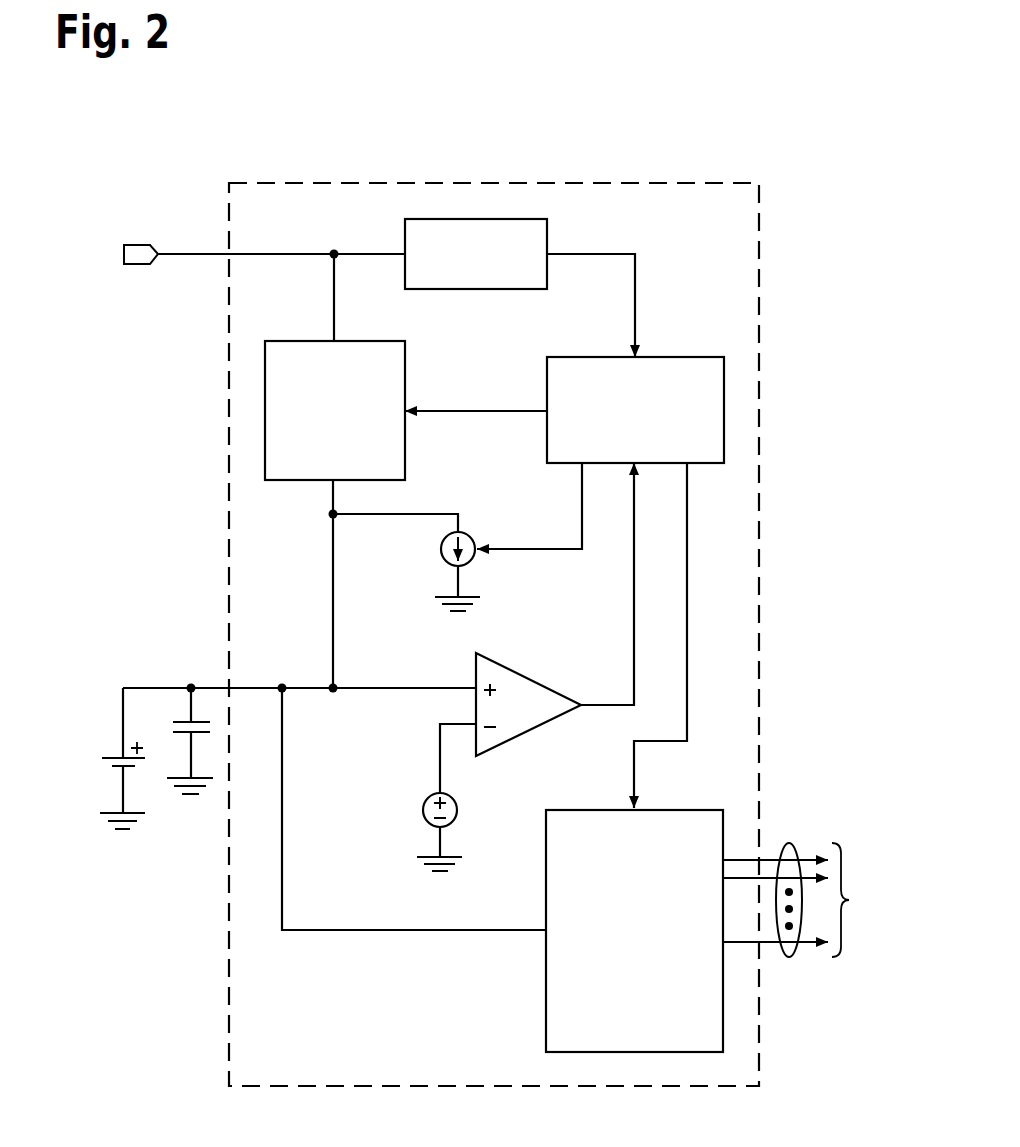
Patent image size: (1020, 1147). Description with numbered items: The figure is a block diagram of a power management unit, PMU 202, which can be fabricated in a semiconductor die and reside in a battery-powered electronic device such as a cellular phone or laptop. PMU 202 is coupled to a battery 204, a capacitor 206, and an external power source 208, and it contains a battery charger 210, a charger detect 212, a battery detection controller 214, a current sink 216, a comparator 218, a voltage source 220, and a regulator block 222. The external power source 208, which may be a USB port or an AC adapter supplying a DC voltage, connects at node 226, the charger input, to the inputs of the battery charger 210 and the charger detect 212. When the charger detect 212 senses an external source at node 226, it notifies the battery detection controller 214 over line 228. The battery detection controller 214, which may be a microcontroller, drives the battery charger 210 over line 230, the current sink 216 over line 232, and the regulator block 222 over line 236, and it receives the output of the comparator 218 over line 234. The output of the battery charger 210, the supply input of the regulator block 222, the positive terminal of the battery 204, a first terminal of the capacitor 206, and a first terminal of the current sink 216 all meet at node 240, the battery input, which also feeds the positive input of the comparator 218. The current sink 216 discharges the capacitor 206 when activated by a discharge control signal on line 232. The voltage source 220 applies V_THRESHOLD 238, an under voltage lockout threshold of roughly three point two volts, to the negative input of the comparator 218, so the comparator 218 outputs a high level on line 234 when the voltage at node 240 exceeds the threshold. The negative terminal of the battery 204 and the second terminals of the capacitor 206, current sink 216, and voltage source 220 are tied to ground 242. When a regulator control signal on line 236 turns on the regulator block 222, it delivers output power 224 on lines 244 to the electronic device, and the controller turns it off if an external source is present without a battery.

The PMU 202 is at (672, 183).
The battery 204 is at (118, 755).
The capacitor 206 is at (188, 720).
The external power source 208 is at (140, 265).
The battery charger 210 is at (405, 378).
The charger detect 212 is at (547, 238).
The battery detection controller 214 is at (678, 357).
The current sink 216 is at (441, 549).
The comparator 218 is at (537, 677).
The voltage source 220 is at (457, 810).
The regulator block 222 is at (546, 978).
The output power 224 is at (824, 900).
The node 226 is at (334, 254).
The line 228 is at (635, 310).
The line 230 is at (467, 413).
The line 232 is at (547, 548).
The line 234 is at (634, 578).
The line 236 is at (687, 618).
The V_THRESHOLD 238 is at (436, 767).
The node 240 is at (282, 688).
The ground 242 is at (105, 812).
The lines 244 is at (788, 958).